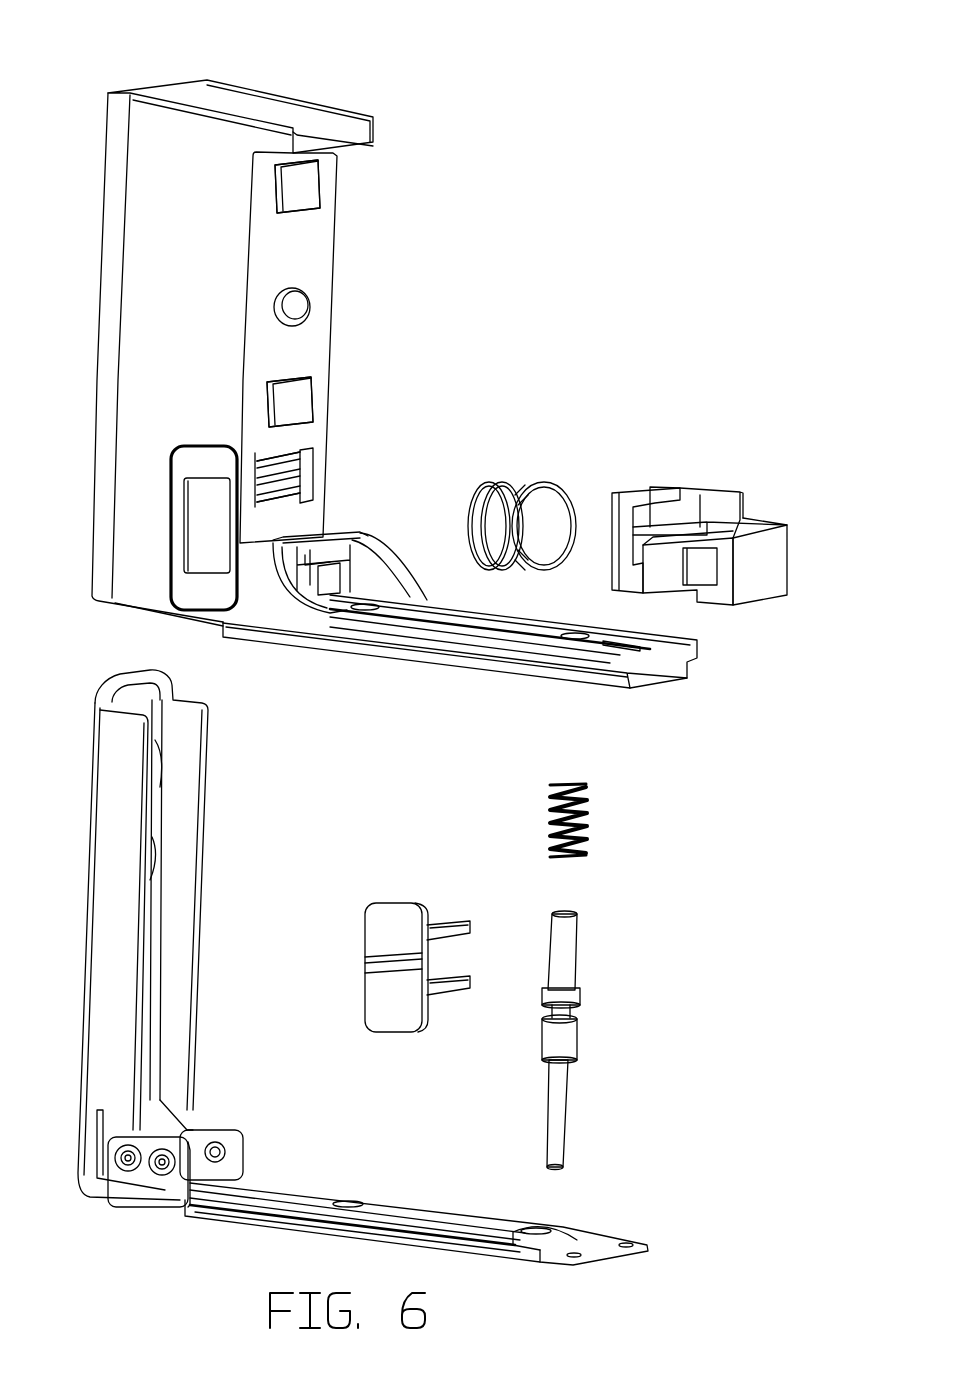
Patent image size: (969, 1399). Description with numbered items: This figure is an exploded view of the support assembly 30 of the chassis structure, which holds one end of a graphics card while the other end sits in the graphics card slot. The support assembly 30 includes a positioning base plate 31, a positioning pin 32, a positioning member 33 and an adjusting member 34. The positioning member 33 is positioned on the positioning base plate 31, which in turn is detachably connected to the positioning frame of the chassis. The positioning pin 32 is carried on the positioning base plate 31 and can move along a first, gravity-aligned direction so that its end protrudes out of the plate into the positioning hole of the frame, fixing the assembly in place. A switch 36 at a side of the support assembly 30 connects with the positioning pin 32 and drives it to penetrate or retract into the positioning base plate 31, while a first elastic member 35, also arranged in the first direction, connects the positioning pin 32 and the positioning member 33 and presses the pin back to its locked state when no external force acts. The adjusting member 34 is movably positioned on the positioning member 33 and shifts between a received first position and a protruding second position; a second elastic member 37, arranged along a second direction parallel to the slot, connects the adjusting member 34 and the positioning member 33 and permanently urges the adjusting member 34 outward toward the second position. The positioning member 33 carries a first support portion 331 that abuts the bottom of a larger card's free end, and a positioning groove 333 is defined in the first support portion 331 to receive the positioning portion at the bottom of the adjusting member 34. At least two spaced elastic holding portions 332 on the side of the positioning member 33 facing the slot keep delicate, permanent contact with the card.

The support assembly 30 is at (388, 25).
The positioning base plate 31 is at (157, 1203).
The positioning pin 32 is at (560, 1115).
The positioning member 33 is at (132, 232).
The adjusting member 34 is at (710, 500).
The first elastic member 35 is at (586, 810).
The switch 36 is at (373, 1023).
The second elastic member 37 is at (533, 483).
The first support portion 331 is at (288, 531).
The elastic holding portions 332 is at (298, 392).
The positioning groove 333 is at (343, 526).